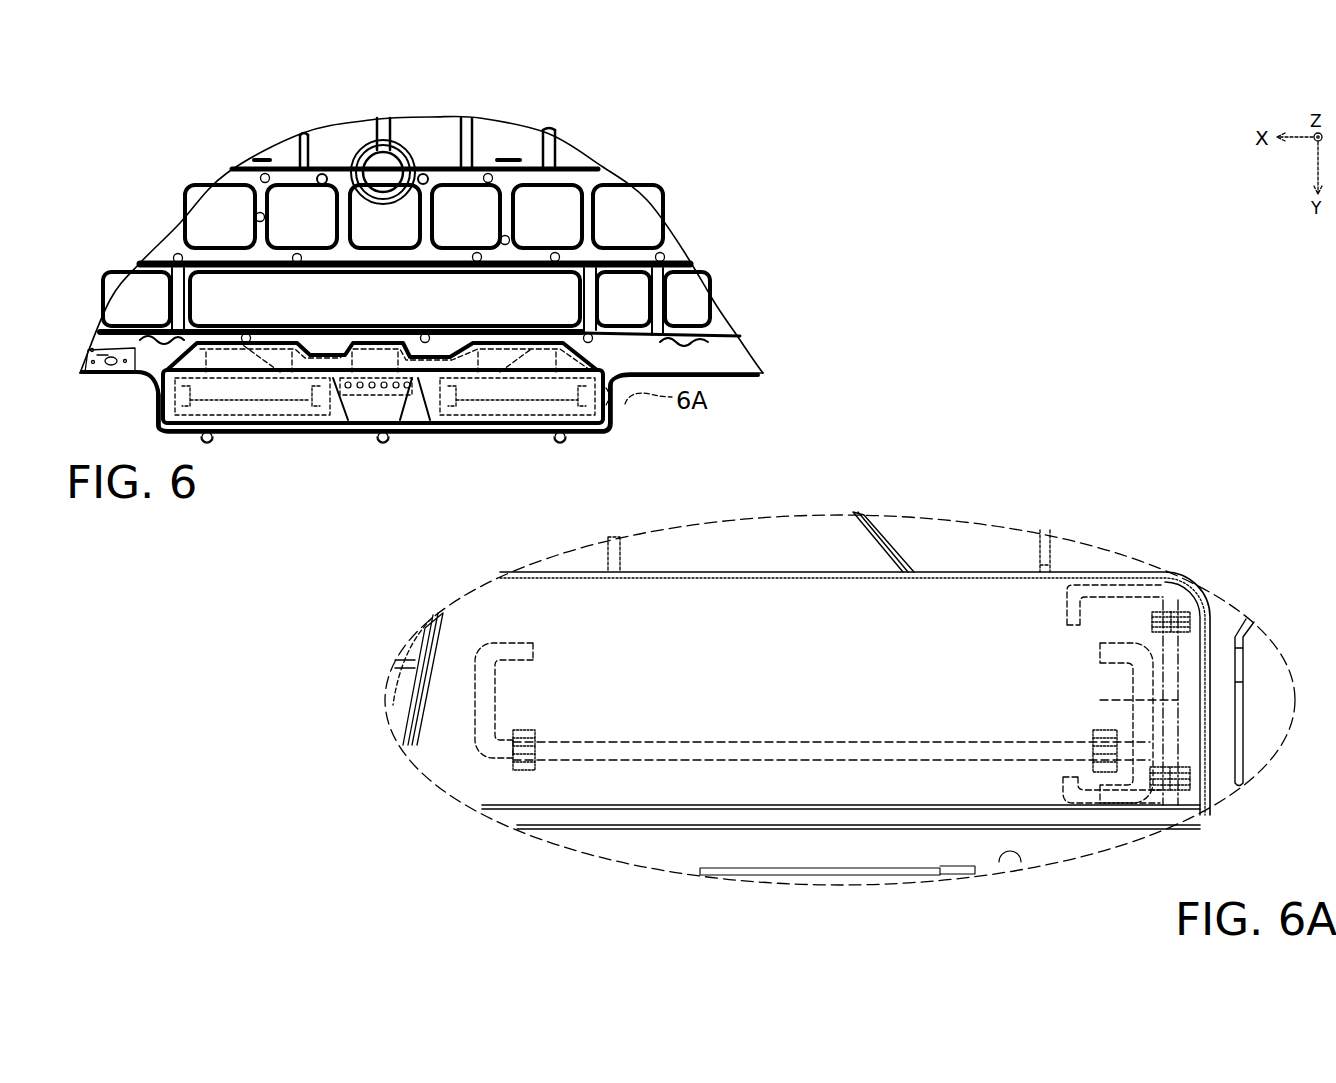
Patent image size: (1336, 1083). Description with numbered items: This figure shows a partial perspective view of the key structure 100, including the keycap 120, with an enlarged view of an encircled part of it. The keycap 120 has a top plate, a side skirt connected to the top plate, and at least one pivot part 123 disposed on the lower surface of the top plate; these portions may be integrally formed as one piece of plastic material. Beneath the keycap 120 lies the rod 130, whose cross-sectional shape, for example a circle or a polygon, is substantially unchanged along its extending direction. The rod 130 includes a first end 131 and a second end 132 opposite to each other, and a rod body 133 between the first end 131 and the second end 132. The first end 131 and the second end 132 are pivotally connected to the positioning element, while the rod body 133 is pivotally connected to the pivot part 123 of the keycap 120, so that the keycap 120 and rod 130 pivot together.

In FIG. 6, the key structure 100 is at (294, 482).
In FIG. 6A, the keycap 120 is at (1090, 572).
In FIG. 6A, the pivot part 123 is at (1190, 622).
In FIG. 6A, the rod 130 is at (1040, 466).
In FIG. 6A, the first end 131 is at (1062, 608).
In FIG. 6A, the second end 132 is at (956, 722).
In FIG. 6A, the rod body 133 is at (1130, 700).